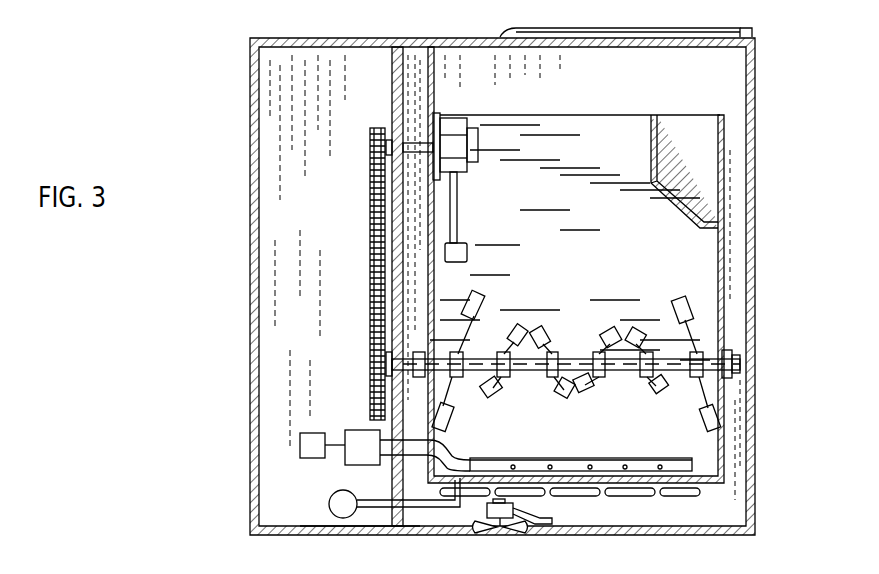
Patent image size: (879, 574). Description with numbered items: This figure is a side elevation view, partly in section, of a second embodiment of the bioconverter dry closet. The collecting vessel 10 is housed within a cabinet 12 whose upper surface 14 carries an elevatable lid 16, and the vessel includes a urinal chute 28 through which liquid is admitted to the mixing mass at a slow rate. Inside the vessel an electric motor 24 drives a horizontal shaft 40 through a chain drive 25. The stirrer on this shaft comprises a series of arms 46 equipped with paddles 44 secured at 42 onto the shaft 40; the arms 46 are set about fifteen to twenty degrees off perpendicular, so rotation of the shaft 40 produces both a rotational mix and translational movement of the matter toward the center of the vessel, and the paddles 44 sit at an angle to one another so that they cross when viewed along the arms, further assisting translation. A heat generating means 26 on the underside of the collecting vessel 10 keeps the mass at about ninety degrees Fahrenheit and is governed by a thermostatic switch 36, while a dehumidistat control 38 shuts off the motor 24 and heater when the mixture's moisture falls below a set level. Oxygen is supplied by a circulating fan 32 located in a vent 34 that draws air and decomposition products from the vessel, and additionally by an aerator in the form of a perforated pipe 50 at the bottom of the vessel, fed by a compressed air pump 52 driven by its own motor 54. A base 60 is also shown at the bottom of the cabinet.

The collecting vessel 10 is at (722, 240).
The cabinet 12 is at (751, 294).
The upper surface 14 is at (425, 40).
The elevatable lid 16 is at (755, 31).
The electric motor 24 is at (458, 130).
The chain drive 25 is at (372, 218).
The heat generating means 26 is at (660, 498).
The urinal chute 28 is at (655, 135).
The circulating fan 32 is at (478, 532).
The vent 34 is at (520, 533).
The thermostatic switch 36 is at (329, 501).
The dehumidistat control 38 is at (468, 252).
The horizontal shaft 40 is at (570, 356).
The securing point 42 is at (510, 378).
The paddles 44 is at (475, 305).
The arms 46 is at (455, 393).
The perforated pipe 50 is at (578, 448).
The compressed air pump 52 is at (357, 430).
The motor 54 is at (318, 433).
The base 60 is at (360, 550).